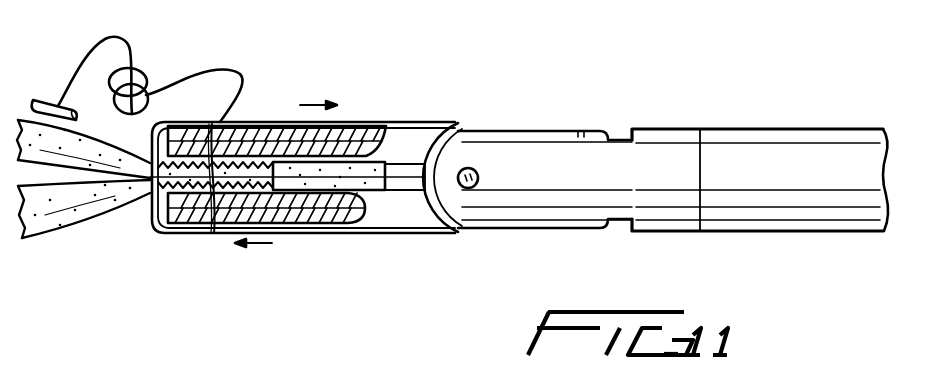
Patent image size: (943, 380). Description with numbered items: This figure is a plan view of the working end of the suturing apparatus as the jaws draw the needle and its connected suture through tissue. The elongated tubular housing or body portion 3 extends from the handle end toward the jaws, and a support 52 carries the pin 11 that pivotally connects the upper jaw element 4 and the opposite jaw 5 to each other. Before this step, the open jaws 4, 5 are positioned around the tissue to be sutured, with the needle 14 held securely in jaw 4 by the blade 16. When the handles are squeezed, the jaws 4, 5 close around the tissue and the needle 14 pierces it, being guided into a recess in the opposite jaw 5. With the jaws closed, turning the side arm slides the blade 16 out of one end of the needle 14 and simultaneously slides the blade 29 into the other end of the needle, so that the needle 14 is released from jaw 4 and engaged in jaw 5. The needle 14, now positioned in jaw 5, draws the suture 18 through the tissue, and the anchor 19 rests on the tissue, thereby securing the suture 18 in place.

The elongated tubular housing 3 is at (780, 128).
The upper jaw element 4 is at (253, 122).
The jaw 5 is at (215, 234).
The pin 11 is at (478, 182).
The needle 14 is at (176, 233).
The blade 16 is at (372, 123).
The suture 18 is at (132, 50).
The anchor 19 is at (47, 105).
The blade 29 is at (303, 233).
The support 52 is at (665, 230).